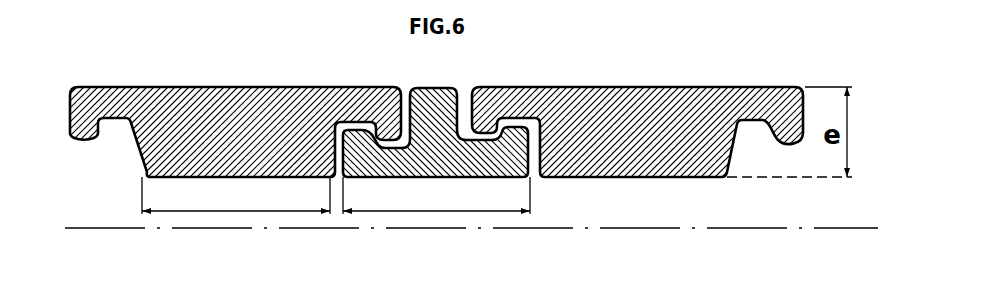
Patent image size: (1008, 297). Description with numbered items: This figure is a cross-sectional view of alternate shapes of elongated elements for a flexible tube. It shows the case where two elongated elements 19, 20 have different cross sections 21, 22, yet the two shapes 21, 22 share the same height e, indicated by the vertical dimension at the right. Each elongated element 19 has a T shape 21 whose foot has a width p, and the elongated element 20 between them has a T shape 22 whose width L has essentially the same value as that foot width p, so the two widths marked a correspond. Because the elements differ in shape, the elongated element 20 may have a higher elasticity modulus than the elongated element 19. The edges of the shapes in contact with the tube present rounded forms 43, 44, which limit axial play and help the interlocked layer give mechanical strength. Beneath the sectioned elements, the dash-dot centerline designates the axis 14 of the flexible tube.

The elongated element 19 is at (229, 80).
The elongated element 20 is at (463, 78).
The cross section 21 is at (608, 162).
The cross section 22 is at (471, 159).
The rounded form 43 is at (318, 184).
The rounded form 44 is at (351, 185).
The axis of the flexible tube 14 is at (857, 228).